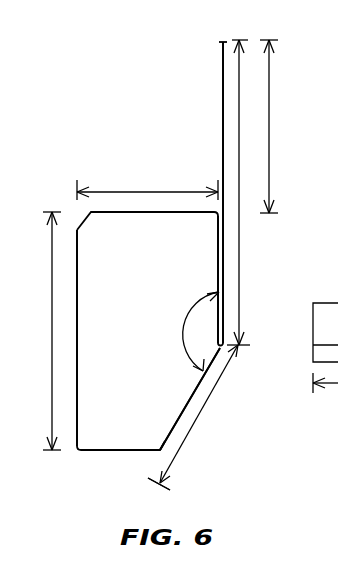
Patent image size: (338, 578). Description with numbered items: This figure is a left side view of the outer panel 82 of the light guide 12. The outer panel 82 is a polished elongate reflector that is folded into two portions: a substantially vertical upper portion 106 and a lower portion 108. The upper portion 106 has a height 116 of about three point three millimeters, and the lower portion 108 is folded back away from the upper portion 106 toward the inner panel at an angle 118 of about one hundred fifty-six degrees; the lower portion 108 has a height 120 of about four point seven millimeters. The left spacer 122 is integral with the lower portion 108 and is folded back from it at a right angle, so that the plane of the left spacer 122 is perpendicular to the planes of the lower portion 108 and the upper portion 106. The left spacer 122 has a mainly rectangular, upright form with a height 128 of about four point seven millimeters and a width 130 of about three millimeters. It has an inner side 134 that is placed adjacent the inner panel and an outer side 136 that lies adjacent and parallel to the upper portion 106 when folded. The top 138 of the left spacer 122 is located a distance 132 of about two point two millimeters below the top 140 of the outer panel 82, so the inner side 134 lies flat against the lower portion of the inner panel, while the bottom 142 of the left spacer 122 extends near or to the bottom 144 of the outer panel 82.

The outer panel 82 is at (125, 107).
The upper portion 106 is at (223, 117).
The lower portion 108 is at (158, 460).
The height 116 is at (238, 284).
The angle 118 is at (195, 356).
The height 120 is at (205, 415).
The left spacer 122 is at (146, 333).
The height 128 is at (52, 312).
The width 130 is at (150, 192).
The distance 132 is at (269, 138).
The inner side 134 is at (80, 265).
The outer side 136 is at (218, 262).
The top 138 is at (135, 212).
The top 140 is at (223, 42).
The bottom 142 is at (126, 450).
The bottom 144 is at (150, 478).
The light guide 12 is at (318, 302).